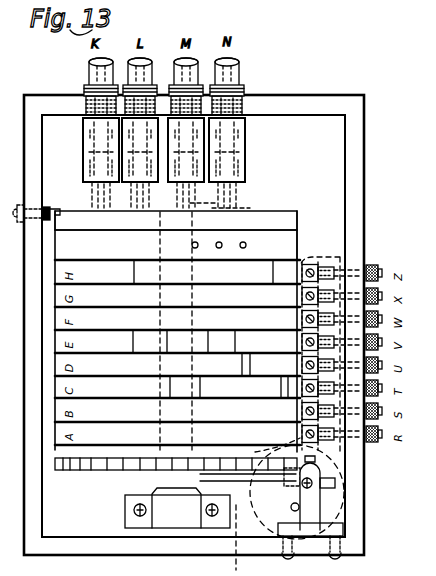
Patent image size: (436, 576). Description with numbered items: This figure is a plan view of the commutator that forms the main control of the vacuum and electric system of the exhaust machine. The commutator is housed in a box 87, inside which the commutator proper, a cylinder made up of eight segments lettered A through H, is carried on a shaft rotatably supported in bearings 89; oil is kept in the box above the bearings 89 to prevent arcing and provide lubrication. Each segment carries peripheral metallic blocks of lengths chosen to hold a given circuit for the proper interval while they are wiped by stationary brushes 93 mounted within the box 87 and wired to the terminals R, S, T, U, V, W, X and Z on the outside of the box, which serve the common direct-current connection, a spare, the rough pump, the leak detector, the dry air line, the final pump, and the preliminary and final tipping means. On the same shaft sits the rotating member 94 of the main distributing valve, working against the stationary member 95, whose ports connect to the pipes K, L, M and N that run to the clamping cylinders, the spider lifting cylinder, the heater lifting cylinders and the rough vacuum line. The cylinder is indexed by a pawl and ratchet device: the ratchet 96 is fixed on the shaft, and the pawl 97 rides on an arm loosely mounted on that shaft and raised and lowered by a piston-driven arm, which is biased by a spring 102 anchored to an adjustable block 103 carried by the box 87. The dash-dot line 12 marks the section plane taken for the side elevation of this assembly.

The base support 12 is at (235, 515).
The box 87 is at (358, 185).
The bearings 89 is at (225, 200).
The stationary brushes 93 is at (300, 430).
The rotating member of the main distributing valve 94 is at (297, 244).
The stationary member of the main distributing valve 95 is at (297, 218).
The ratchet 96 is at (100, 471).
The pawl 97 is at (321, 462).
The spring 102 is at (290, 506).
The adjustable block 103 is at (313, 503).